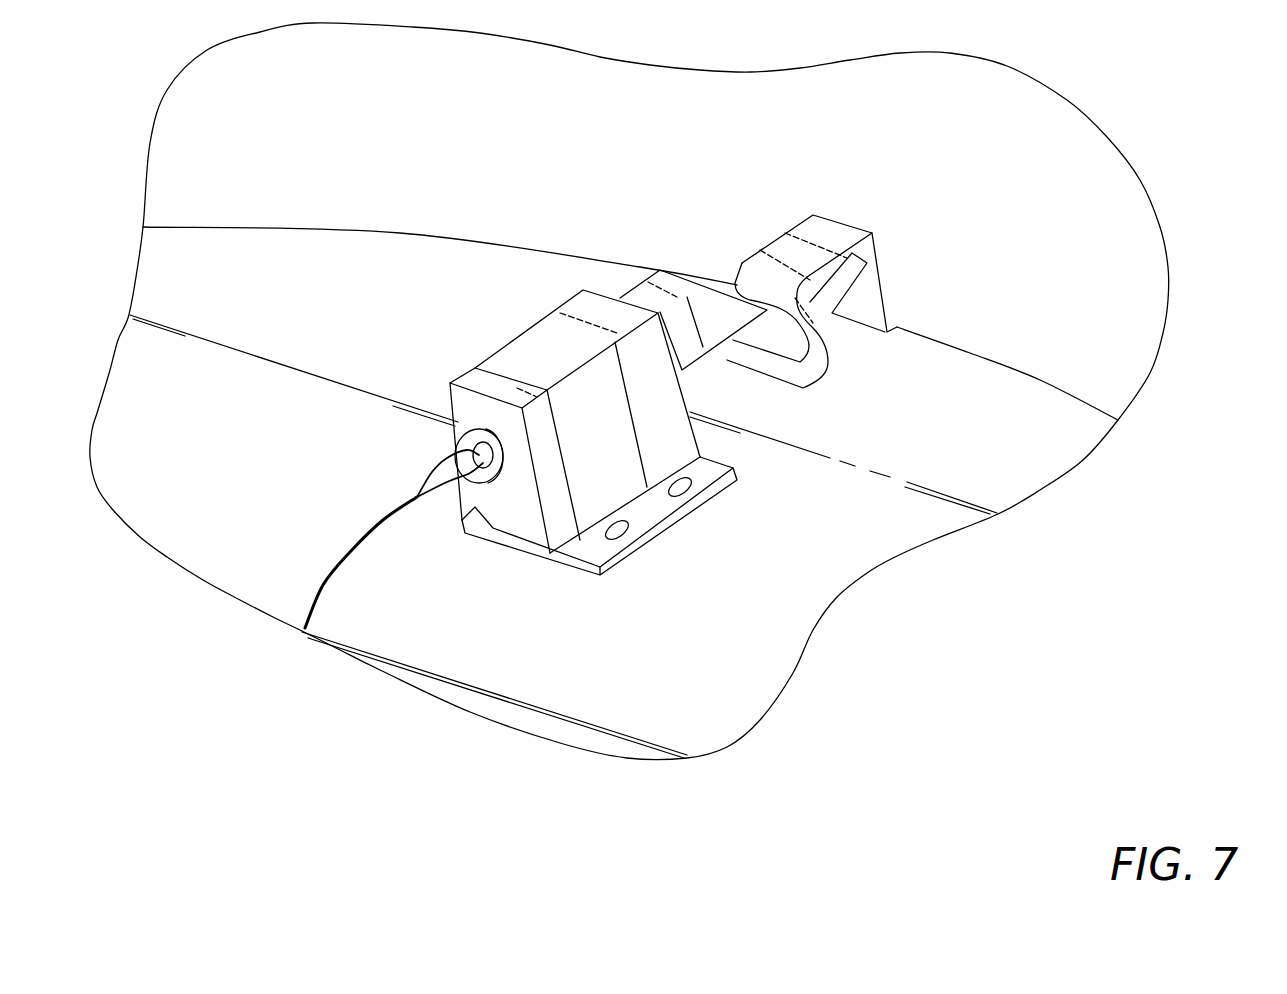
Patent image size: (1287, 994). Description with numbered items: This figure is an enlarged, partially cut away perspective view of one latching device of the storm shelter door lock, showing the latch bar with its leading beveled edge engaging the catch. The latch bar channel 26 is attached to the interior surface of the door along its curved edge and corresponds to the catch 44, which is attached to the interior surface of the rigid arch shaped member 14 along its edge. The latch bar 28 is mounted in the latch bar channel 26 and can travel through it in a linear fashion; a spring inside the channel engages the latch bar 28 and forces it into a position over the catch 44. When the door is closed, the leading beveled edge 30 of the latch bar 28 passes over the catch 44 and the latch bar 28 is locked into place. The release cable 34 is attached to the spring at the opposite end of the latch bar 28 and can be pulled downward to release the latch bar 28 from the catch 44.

The rigid arch shaped member 14 is at (400, 233).
The latch bar channel 26 is at (490, 355).
The latch bar 28 is at (650, 263).
The leading beveled edge 30 is at (733, 277).
The release cable 34 is at (347, 563).
The catch 44 is at (777, 240).